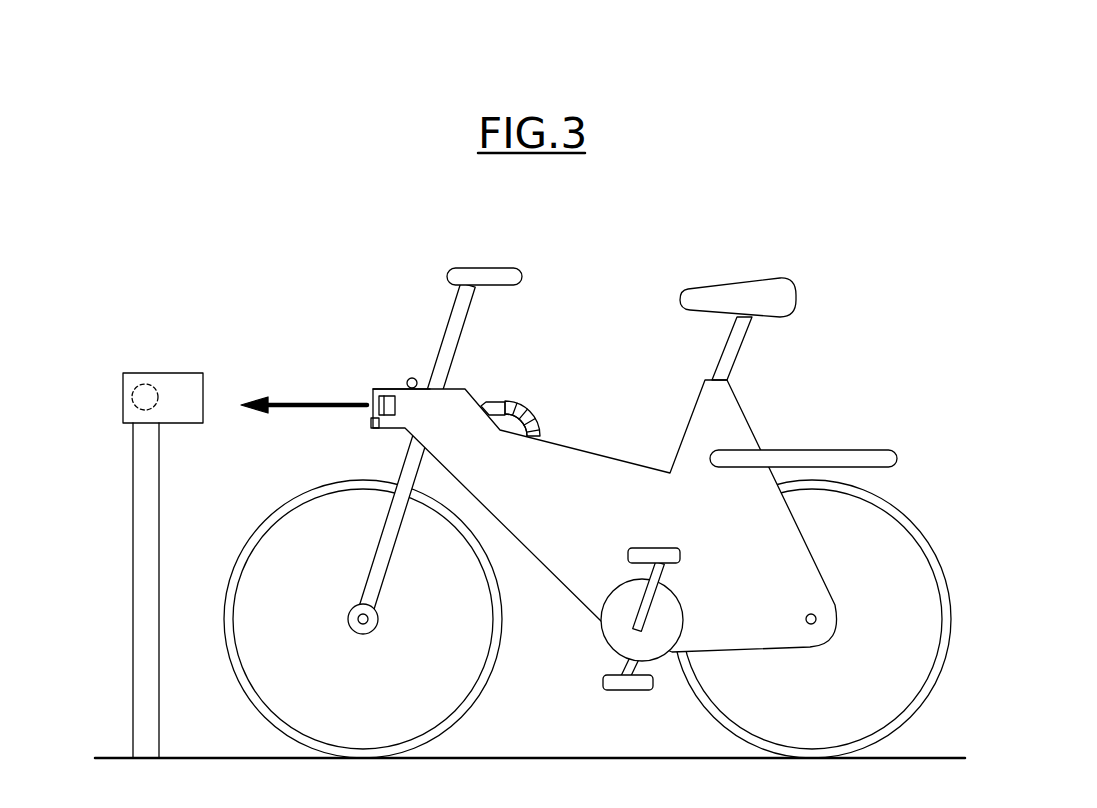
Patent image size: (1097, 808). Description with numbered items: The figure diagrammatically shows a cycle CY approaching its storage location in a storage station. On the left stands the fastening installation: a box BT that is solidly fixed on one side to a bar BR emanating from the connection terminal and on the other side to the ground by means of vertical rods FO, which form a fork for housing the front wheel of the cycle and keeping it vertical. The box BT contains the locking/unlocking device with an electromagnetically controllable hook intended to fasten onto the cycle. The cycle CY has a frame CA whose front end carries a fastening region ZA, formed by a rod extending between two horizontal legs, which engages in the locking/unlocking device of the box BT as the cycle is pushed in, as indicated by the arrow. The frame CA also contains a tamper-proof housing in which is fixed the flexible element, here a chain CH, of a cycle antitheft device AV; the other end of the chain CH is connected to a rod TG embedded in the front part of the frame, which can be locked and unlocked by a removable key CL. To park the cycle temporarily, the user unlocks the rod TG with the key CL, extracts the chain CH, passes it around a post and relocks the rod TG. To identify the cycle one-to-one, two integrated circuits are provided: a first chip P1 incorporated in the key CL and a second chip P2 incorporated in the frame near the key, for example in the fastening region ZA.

The cycle CY is at (673, 259).
The box BT is at (189, 369).
The bar BR is at (145, 385).
The vertical rod FO is at (142, 530).
The removable key CL is at (402, 376).
The integrated circuit P1 is at (412, 377).
The integrated circuit P2 is at (380, 429).
The fastening region ZA is at (376, 404).
The rod TG is at (497, 410).
The cycle antitheft device AV is at (529, 394).
The flexible element (chain) CH is at (534, 417).
The frame CA is at (588, 449).